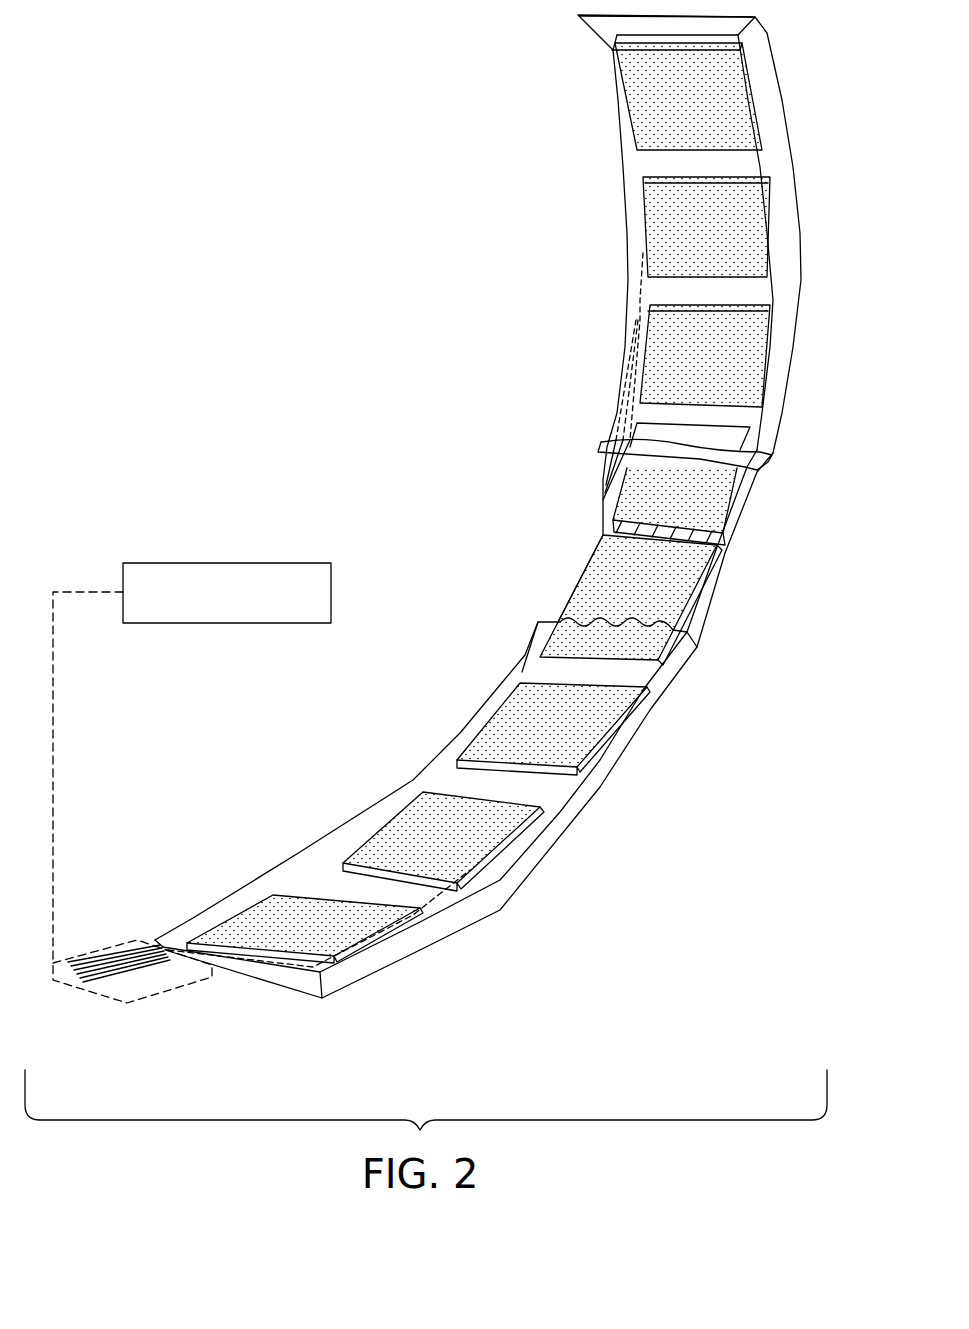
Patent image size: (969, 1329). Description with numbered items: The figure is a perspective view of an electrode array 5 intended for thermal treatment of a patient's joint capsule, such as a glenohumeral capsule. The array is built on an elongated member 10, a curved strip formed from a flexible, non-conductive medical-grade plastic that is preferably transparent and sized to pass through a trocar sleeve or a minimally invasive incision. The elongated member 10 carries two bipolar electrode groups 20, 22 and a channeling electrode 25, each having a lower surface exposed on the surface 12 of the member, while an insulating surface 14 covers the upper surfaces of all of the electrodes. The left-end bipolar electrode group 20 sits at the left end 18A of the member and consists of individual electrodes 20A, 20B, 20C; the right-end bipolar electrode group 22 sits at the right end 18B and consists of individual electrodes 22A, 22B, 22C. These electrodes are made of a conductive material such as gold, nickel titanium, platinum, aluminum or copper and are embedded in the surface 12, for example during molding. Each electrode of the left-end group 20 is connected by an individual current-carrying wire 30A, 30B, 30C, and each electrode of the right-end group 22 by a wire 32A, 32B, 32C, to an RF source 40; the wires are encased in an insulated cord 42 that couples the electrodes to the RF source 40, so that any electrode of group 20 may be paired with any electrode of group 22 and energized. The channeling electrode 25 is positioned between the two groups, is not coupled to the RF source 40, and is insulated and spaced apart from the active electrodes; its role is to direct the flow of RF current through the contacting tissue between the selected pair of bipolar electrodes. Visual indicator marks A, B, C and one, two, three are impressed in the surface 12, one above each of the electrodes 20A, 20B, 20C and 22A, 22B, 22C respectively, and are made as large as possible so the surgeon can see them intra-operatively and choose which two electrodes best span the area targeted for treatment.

The electrode array 5 is at (326, 158).
The elongated member 10 is at (403, 788).
The surface of elongated member 12 is at (753, 473).
The insulating surface 14 is at (538, 672).
The left end 18A is at (153, 940).
The right end 18B is at (610, 40).
The left-end bipolar electrode group 20 is at (446, 853).
The bipolar electrode 20A is at (360, 937).
The bipolar electrode 20B is at (513, 833).
The bipolar electrode 20C is at (637, 717).
The right-end bipolar electrode group 22 is at (664, 225).
The bipolar electrode 22A is at (647, 327).
The bipolar electrode 22B is at (647, 273).
The bipolar electrode 22C is at (627, 120).
The channeling electrode 25 is at (613, 573).
The current-carrying wire 30A is at (120, 983).
The current-carrying wire 30B is at (142, 975).
The current-carrying wire 30C is at (165, 968).
The current-carrying wire 32A is at (603, 497).
The current-carrying wire 32B is at (603, 480).
The current-carrying wire 32C is at (607, 463).
The RF source 40 is at (228, 563).
The insulated cord 42 is at (113, 1007).